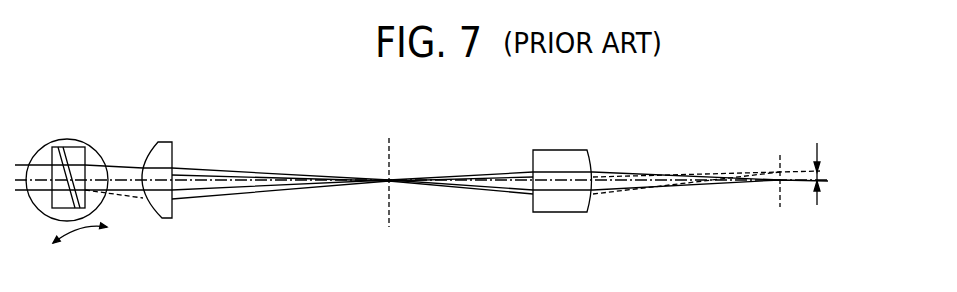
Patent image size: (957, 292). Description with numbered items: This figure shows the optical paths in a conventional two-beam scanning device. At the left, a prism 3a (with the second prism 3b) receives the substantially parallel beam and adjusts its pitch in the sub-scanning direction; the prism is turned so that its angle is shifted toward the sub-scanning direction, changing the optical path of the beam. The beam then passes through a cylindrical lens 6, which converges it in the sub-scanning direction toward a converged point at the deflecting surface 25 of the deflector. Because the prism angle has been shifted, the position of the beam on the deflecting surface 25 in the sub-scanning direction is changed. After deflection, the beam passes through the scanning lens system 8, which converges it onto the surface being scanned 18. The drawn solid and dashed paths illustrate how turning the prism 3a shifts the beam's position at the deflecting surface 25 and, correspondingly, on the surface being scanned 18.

The prism 3a is at (78, 164).
The prism 3b is at (73, 152).
The cylindrical lens 6 is at (160, 153).
The deflecting surface 25 is at (392, 152).
The scanning lens system 8 is at (563, 157).
The surface being scanned 18 is at (780, 200).